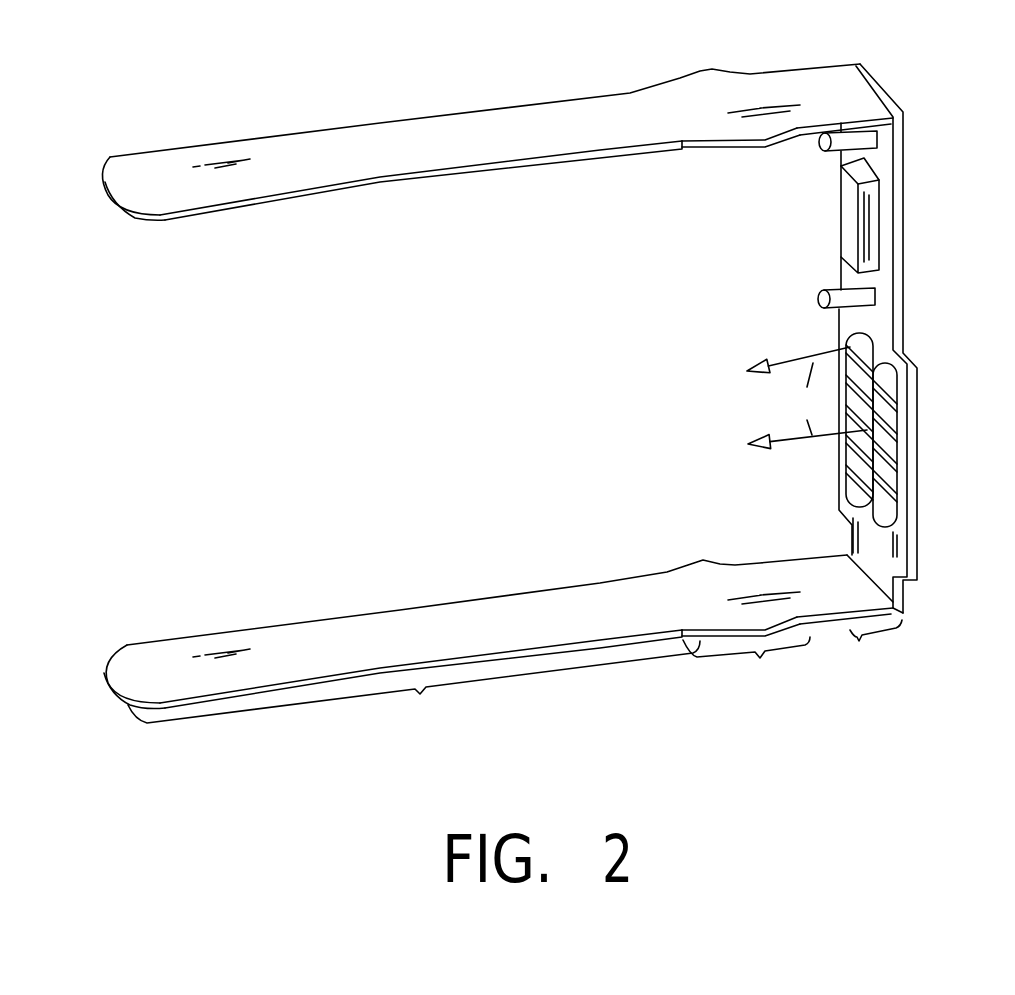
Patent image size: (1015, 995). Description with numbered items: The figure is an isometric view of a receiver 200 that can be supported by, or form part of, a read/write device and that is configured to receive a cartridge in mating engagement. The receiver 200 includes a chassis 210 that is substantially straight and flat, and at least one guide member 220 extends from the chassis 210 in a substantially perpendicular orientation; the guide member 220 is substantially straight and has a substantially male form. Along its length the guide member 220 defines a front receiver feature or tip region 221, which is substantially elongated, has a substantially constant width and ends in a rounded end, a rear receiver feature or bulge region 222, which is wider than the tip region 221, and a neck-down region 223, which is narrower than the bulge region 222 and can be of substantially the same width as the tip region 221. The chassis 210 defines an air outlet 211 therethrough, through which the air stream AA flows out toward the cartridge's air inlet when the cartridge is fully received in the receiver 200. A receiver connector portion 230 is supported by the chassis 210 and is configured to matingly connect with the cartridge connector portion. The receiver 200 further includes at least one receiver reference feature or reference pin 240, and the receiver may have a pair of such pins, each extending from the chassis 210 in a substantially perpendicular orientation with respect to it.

The receiver 200 is at (381, 86).
The chassis 210 is at (901, 250).
The air outlet 211 is at (857, 348).
The guide member 220 is at (150, 173).
The front receiver feature 221 is at (414, 686).
The rear receiver feature 222 is at (746, 412).
The neck-down region 223 is at (849, 397).
The receiver connector portion 230 is at (850, 222).
The receiver reference feature 240 is at (820, 140).